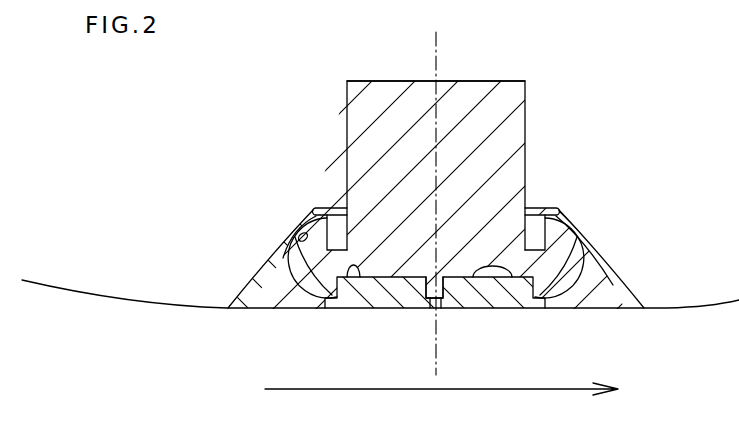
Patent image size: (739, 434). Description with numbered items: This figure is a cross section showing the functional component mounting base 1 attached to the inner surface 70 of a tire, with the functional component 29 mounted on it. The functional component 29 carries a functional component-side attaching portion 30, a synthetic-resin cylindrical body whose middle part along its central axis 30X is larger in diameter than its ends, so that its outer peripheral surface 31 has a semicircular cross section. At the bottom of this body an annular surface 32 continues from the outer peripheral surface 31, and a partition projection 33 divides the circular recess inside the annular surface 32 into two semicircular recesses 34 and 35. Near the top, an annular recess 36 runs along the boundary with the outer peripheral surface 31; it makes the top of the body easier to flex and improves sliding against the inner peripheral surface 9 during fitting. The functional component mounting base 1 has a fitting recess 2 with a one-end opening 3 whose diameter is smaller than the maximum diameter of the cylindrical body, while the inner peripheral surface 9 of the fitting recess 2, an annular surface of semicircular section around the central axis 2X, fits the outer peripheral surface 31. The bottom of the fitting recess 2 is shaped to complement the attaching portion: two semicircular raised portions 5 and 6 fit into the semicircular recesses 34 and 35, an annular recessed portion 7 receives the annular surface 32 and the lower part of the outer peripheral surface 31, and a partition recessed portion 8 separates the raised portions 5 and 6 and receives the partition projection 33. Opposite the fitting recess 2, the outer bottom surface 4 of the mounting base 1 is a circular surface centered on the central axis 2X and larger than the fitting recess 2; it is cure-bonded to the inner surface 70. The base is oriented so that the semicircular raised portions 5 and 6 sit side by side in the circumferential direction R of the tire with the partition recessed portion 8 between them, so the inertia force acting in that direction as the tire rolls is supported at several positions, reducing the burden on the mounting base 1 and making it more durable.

The functional component mounting base 1 is at (595, 242).
The fitting recess 2 is at (531, 214).
The opening 3 is at (569, 216).
The outer bottom surface 4 is at (485, 309).
The semicircular raised portion 5 is at (352, 309).
The semicircular raised portion 6 is at (503, 275).
The annular recessed portion 7 is at (555, 267).
The partition recessed portion 8 is at (440, 303).
The inner peripheral surface 9 is at (300, 237).
The functional component 29 is at (528, 108).
The functional component-side attaching portion 30 is at (575, 222).
The outer peripheral surface 31 is at (290, 265).
The annular surface 32 is at (326, 309).
The partition projection 33 is at (428, 303).
The semicircular recess 34 is at (372, 282).
The semicircular recess 35 is at (473, 278).
The annular recess 36 is at (338, 225).
The inner surface 70 is at (663, 308).
The central axis 30X is at (481, 203).
The central axis 2X is at (437, 69).
The circumferential direction R is at (425, 389).